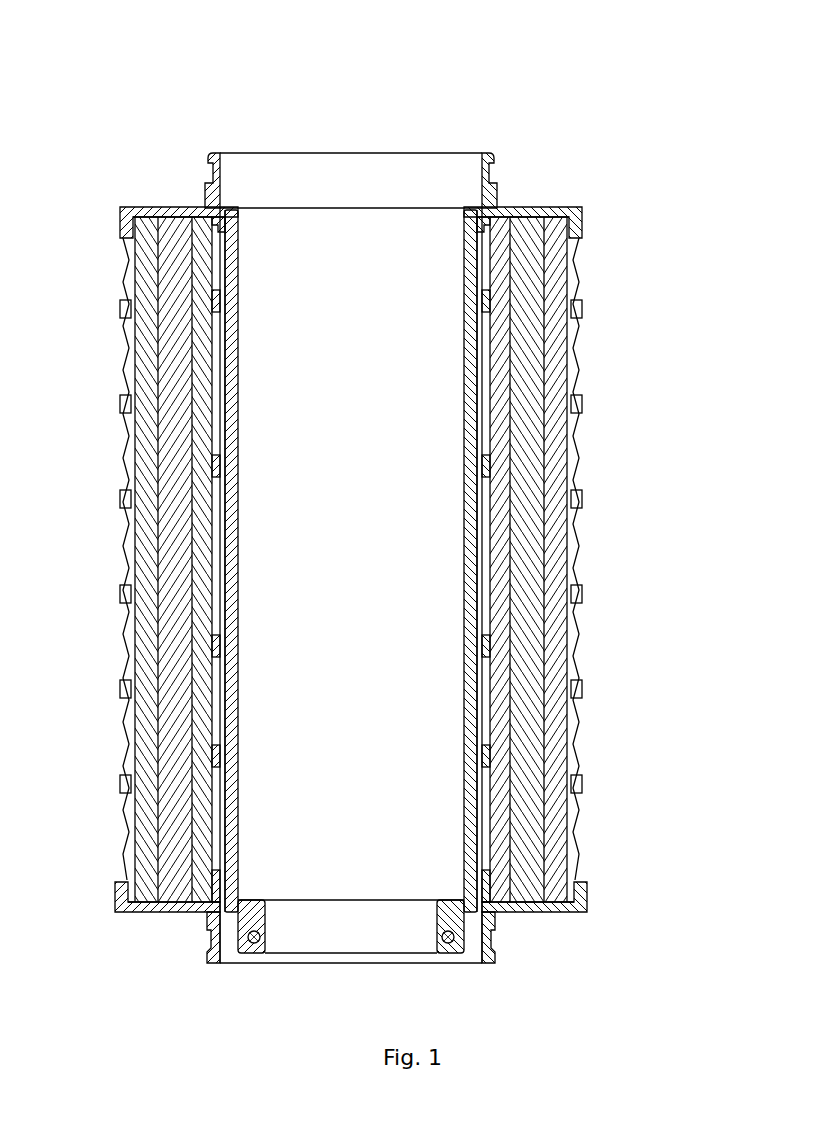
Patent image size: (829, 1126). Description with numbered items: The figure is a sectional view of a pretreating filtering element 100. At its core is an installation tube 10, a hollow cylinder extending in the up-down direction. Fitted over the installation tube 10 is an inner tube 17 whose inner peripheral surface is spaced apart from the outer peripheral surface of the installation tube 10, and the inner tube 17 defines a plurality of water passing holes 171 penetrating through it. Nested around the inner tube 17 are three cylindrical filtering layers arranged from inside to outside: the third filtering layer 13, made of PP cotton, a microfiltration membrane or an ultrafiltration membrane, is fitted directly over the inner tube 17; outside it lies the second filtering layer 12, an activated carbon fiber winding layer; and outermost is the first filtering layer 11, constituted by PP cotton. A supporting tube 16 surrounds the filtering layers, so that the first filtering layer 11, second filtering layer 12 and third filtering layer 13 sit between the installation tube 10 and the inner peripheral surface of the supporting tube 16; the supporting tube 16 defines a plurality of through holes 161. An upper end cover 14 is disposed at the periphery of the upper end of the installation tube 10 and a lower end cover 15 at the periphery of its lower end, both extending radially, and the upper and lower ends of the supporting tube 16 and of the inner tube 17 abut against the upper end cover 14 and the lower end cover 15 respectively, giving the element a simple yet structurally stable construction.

The pretreating filtering element 100 is at (318, 165).
The installation tube 10 is at (463, 587).
The first filtering layer 11 is at (557, 678).
The second filtering layer 12 is at (517, 732).
The third filtering layer 13 is at (488, 755).
The upper end cover 14 is at (545, 210).
The lower end cover 15 is at (500, 910).
The supporting tube 16 is at (578, 608).
The through holes 161 is at (575, 572).
The inner tube 17 is at (217, 627).
The water passing holes 171 is at (220, 577).